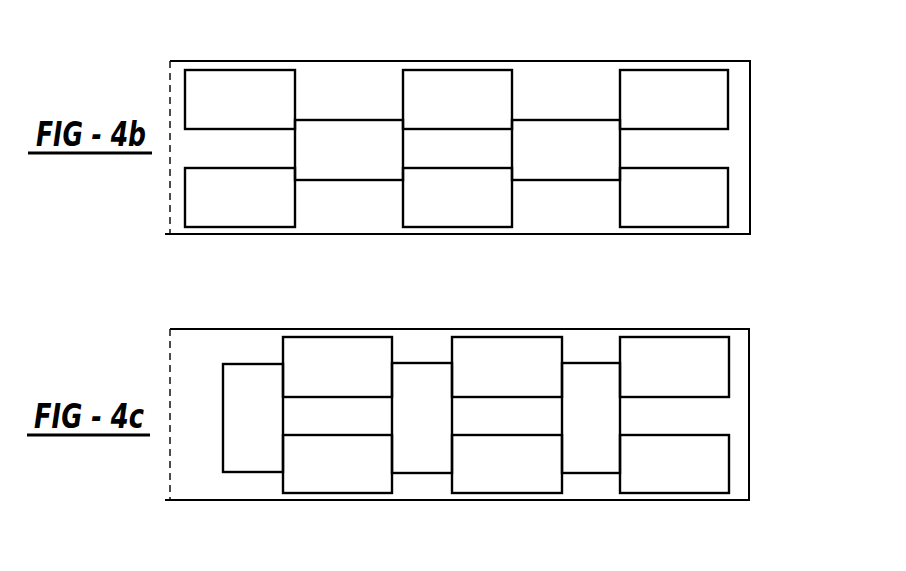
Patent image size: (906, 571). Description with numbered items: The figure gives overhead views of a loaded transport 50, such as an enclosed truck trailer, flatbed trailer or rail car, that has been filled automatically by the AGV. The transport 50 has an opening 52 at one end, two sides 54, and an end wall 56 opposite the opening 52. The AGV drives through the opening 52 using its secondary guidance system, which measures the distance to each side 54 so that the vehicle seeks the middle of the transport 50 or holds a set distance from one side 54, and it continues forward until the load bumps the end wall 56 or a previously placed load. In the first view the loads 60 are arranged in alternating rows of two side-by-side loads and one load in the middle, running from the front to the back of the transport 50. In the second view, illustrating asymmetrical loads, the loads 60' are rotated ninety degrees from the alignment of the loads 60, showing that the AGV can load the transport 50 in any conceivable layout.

In FIG. 4B, the transport 50 is at (555, 55).
In FIG. 4C, the transport 50 is at (279, 568).
In FIG. 4B, the opening 52 is at (170, 197).
In FIG. 4C, the opening 52 is at (168, 478).
In FIG. 4B, the side 54 is at (346, 61).
In FIG. 4C, the side 54 is at (365, 337).
In FIG. 4B, the end wall 56 is at (751, 148).
In FIG. 4C, the end wall 56 is at (750, 447).
In FIG. 4B, the load 60 is at (536, 143).
In FIG. 4C, the load 60 is at (592, 425).
In FIG. 4C, the rotated load 60' is at (508, 467).